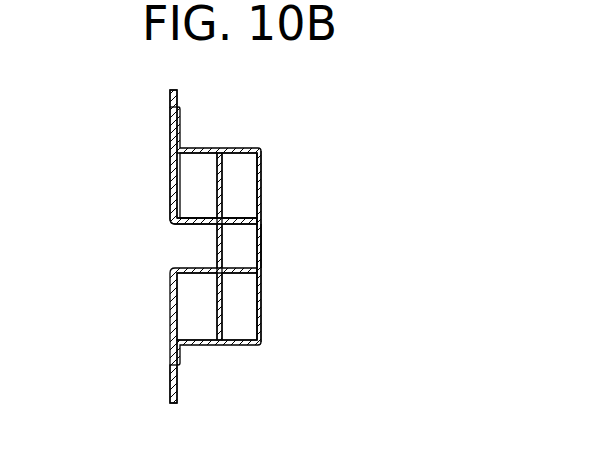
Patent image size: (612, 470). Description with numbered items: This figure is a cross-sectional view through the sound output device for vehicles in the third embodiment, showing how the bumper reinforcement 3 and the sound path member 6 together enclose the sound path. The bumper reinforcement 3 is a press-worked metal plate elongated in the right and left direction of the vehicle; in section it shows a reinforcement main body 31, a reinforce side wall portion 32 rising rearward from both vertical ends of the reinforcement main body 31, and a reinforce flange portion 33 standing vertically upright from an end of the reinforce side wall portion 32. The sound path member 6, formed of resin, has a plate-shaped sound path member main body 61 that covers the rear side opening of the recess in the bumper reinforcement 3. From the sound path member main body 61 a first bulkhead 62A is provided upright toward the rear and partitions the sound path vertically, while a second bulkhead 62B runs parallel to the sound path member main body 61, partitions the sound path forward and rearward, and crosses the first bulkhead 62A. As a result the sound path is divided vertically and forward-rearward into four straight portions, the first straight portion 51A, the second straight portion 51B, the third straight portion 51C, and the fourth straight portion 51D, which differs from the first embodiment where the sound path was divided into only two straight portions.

The bumper reinforcement 3 is at (268, 287).
The sound path member 6 is at (167, 320).
The reinforcement main body 31 is at (262, 245).
The reinforce side wall portion 32 is at (245, 148).
The reinforce flange portion 33 is at (181, 130).
The first straight portion 51A is at (238, 324).
The second straight portion 51B is at (236, 173).
The third straight portion 51C is at (193, 178).
The fourth straight portion 51D is at (196, 324).
The sound path member main body 61 is at (172, 189).
The first bulkhead 62A is at (196, 224).
The second bulkhead 62B is at (224, 197).